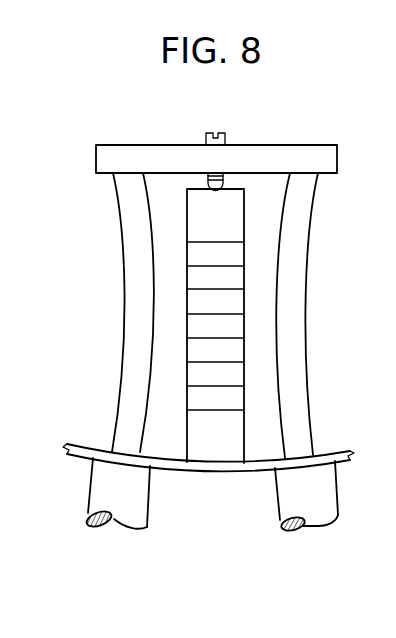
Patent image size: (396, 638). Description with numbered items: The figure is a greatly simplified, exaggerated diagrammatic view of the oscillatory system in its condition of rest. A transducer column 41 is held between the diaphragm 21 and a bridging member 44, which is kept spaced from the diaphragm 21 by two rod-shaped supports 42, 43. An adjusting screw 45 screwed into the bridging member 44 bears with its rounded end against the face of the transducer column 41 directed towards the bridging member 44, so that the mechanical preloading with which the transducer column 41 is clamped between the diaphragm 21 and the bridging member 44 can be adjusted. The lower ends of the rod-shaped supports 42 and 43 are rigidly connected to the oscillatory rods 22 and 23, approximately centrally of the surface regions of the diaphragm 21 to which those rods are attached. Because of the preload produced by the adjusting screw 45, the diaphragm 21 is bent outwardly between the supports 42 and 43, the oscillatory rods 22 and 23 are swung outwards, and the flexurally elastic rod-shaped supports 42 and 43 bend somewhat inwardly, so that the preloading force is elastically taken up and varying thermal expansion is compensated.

The diaphragm 21 is at (334, 452).
The oscillatory rod 22 is at (327, 487).
The oscillatory rod 23 is at (102, 489).
The transducer column 41 is at (250, 197).
The rod-shaped support 42 is at (303, 242).
The rod-shaped support 43 is at (128, 243).
The bridging member 44 is at (139, 153).
The adjusting screw 45 is at (228, 142).